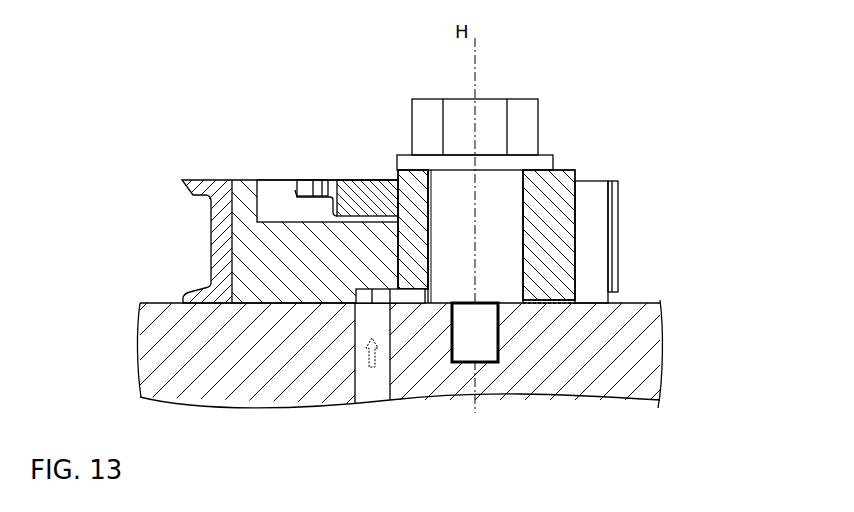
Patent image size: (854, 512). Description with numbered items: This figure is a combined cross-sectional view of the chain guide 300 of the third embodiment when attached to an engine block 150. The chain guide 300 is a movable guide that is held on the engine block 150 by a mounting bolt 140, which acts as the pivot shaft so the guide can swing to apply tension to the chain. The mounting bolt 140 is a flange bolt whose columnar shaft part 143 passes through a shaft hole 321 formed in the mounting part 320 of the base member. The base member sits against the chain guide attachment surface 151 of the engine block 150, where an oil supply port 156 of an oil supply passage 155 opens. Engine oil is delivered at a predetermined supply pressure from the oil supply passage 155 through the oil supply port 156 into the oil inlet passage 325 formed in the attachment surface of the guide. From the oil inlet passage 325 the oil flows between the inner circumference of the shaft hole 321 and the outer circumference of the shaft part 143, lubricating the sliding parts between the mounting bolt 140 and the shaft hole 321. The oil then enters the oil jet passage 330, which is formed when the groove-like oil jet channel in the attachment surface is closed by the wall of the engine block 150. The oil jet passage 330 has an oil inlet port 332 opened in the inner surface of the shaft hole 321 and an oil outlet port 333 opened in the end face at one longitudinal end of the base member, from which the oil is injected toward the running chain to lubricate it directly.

The mounting bolt 140 is at (503, 93).
The shaft part 143 is at (513, 192).
The engine block 150 is at (642, 333).
The chain guide attachment surface 151 is at (642, 303).
The oil supply passage 155 is at (377, 388).
The oil supply port 156 is at (383, 305).
The chain guide 300 is at (240, 174).
The mounting part 320 is at (397, 197).
The shaft hole 321 is at (430, 206).
The oil inlet passage 325 is at (375, 284).
The oil jet passage 330 is at (574, 305).
The oil inlet port 332 is at (531, 305).
The oil outlet port 333 is at (577, 302).